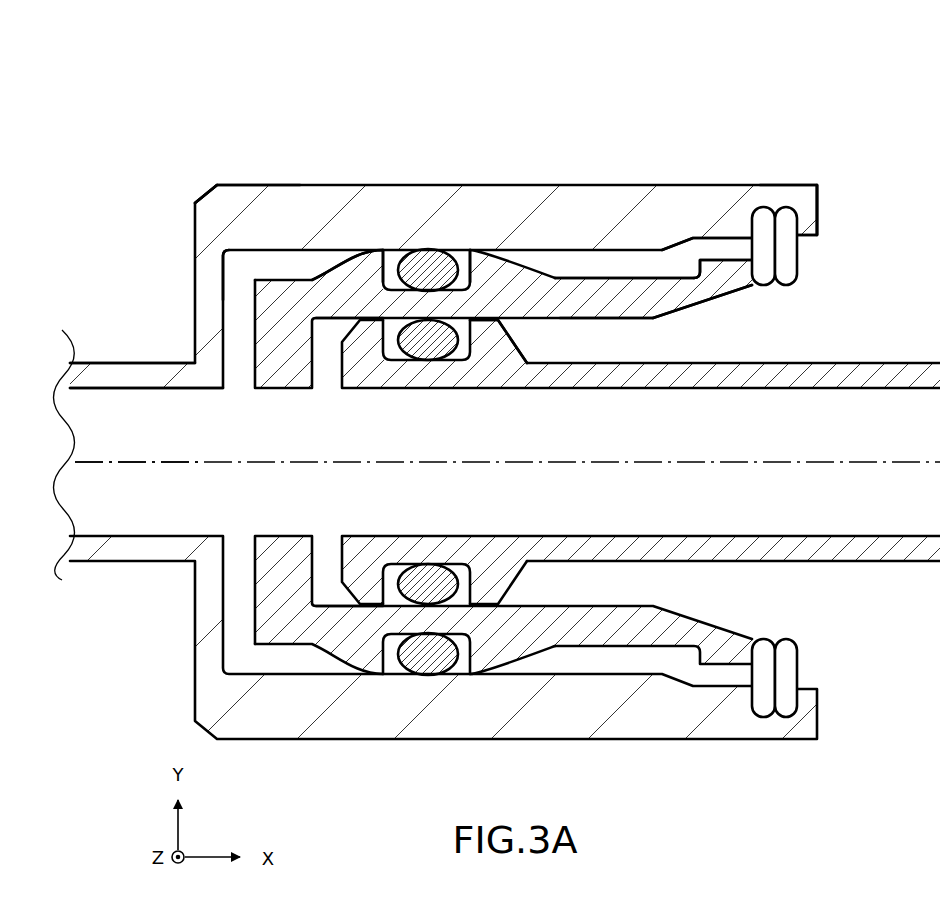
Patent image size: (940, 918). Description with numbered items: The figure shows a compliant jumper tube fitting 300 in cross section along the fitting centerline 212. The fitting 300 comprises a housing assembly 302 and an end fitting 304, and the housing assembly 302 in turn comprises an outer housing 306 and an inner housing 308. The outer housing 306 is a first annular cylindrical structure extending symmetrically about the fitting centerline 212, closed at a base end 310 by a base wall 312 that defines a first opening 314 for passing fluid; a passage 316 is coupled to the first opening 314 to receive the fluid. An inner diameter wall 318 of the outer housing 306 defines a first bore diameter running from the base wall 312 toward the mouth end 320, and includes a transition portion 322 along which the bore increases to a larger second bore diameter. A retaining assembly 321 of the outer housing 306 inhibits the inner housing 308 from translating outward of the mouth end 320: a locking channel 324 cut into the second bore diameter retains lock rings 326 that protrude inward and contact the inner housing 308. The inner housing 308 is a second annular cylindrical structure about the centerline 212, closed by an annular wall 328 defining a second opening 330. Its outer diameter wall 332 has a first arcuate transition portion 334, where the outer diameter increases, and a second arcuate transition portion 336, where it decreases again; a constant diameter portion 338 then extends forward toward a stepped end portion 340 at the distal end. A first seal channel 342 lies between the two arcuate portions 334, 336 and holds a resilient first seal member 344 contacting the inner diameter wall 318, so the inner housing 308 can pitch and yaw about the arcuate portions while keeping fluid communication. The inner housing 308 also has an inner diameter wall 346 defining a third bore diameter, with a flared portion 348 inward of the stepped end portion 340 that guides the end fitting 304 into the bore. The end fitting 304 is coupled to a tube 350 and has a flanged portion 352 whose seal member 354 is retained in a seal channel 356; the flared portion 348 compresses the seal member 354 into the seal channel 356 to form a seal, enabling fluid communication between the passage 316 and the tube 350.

The fitting centerline 212 is at (118, 466).
The compliant jumper tube fitting 300 is at (632, 70).
The housing assembly 302 is at (396, 76).
The end fitting 304 is at (557, 520).
The outer housing 306 is at (287, 197).
The inner housing 308 is at (557, 298).
The base end 310 is at (163, 203).
The base wall 312 is at (207, 253).
The first opening 314 is at (256, 450).
The passage 316 is at (110, 380).
The inner diameter wall 318 is at (245, 247).
The mouth end 320 is at (820, 184).
The retaining assembly 321 is at (806, 220).
The transition portion 322 is at (685, 235).
The locking channel 324 is at (782, 213).
The lock rings 326 is at (765, 217).
The annular wall 328 is at (263, 305).
The second opening 330 is at (343, 453).
The outer diameter wall 332 is at (300, 278).
The first arcuate transition portion 334 is at (365, 267).
The second arcuate transition portion 336 is at (480, 256).
The constant diameter portion 338 is at (618, 277).
The stepped end portion 340 is at (740, 260).
The first seal channel 342 is at (498, 266).
The first seal member 344 is at (428, 262).
The inner diameter wall 346 is at (632, 322).
The flared portion 348 is at (715, 295).
The tube 350 is at (808, 376).
The flanged portion 352 is at (497, 340).
The seal member 354 is at (440, 343).
The seal channel 356 is at (400, 360).